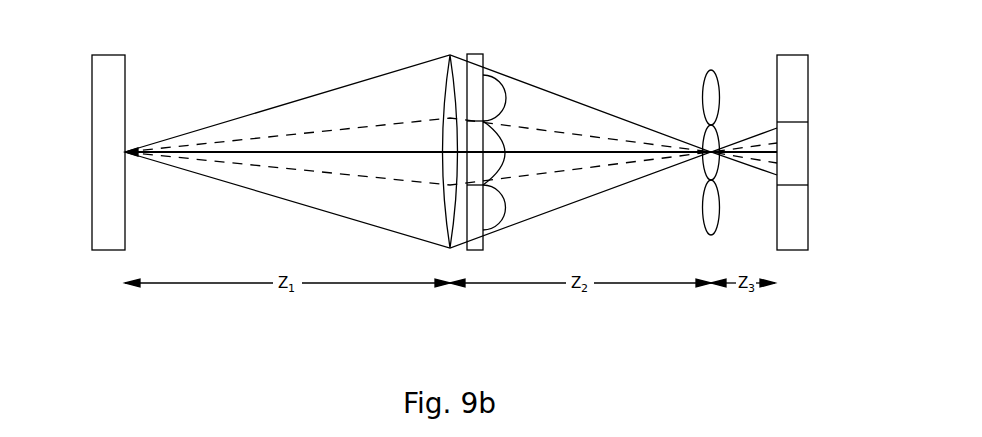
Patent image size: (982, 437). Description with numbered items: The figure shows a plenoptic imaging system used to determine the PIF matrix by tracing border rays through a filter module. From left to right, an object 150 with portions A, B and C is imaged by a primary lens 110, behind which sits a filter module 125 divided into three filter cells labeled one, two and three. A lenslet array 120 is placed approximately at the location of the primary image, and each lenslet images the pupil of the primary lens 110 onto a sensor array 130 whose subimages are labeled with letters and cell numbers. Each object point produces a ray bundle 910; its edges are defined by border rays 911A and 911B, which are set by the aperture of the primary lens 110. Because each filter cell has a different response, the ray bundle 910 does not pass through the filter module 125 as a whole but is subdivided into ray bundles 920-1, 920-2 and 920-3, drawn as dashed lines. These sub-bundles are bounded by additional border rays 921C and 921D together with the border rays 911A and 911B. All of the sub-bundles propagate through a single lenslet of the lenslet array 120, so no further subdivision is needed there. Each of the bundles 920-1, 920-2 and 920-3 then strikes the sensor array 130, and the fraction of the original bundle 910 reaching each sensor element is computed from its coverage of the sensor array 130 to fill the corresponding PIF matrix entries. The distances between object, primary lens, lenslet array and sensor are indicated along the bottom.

The object 150 is at (109, 250).
The primary lens 110 is at (450, 248).
The filter module 125 is at (483, 226).
The lenslet array 120 is at (711, 235).
The sensor array 130 is at (793, 250).
The ray bundle 910 is at (207, 173).
The border ray 911A is at (363, 80).
The border ray 911B is at (335, 214).
The border ray 921C is at (341, 128).
The border ray 921D is at (295, 170).
The ray bundle 920-1 is at (505, 212).
The ray bundle 920-2 is at (505, 121).
The ray bundle 920-3 is at (500, 78).